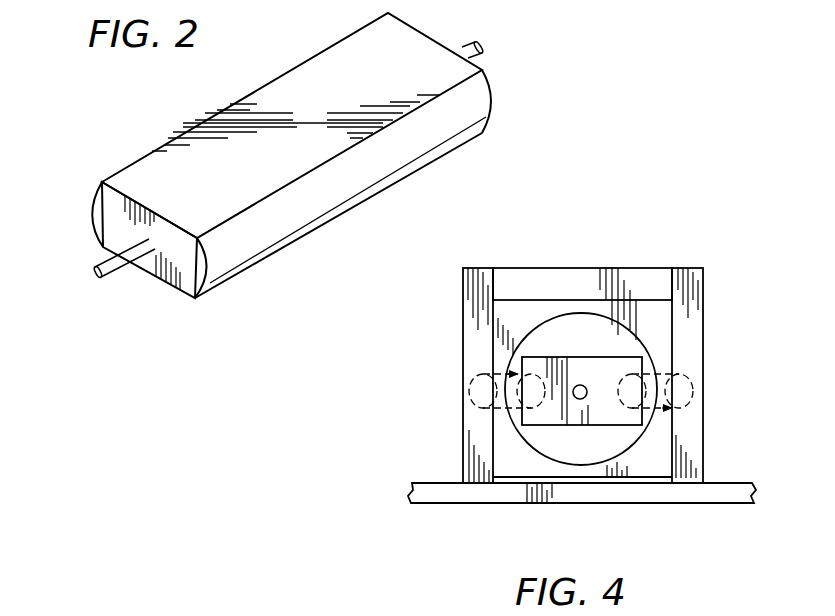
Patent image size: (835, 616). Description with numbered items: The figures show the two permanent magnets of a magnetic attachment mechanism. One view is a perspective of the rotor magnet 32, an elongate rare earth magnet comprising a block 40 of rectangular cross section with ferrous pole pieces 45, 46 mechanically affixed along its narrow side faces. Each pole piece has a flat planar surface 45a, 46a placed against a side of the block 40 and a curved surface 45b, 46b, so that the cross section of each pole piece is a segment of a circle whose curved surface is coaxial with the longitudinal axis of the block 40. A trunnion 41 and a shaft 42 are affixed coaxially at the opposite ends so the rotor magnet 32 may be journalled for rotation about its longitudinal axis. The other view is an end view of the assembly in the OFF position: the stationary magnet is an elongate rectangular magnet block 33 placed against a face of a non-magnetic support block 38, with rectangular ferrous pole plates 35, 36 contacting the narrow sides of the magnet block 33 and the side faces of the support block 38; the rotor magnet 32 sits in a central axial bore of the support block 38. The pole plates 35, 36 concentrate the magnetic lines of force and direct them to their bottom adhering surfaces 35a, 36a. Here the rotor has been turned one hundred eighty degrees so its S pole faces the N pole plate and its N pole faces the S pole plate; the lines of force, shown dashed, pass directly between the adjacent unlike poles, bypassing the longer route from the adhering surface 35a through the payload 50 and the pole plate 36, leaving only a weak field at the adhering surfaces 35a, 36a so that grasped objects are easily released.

In FIG. 2, the rotor permanent magnet 32 is at (131, 162).
In FIG. 2, the trunnion 41 is at (467, 43).
In FIG. 2, the shaft 42 is at (121, 270).
In FIG. 4, the shaft 42 is at (578, 384).
In FIG. 2, the pole piece 45 is at (97, 218).
In FIG. 2, the flat planar surface of pole piece 45a is at (103, 250).
In FIG. 2, the curved surface of pole piece 45b is at (95, 198).
In FIG. 2, the pole piece 46 is at (208, 277).
In FIG. 2, the flat planar surface of pole piece 46a is at (190, 297).
In FIG. 2, the curved surface of pole piece 46b is at (492, 103).
In FIG. 4, the magnet block 33 is at (583, 280).
In FIG. 4, the pole plate 35 is at (468, 322).
In FIG. 4, the adhering surface 35a is at (480, 485).
In FIG. 4, the pole plate 36 is at (693, 318).
In FIG. 4, the adhering surface 36a is at (687, 485).
In FIG. 4, the support block 38 is at (642, 467).
In FIG. 4, the rotor magnet block 40 is at (597, 413).
In FIG. 4, the payload 50 is at (582, 493).